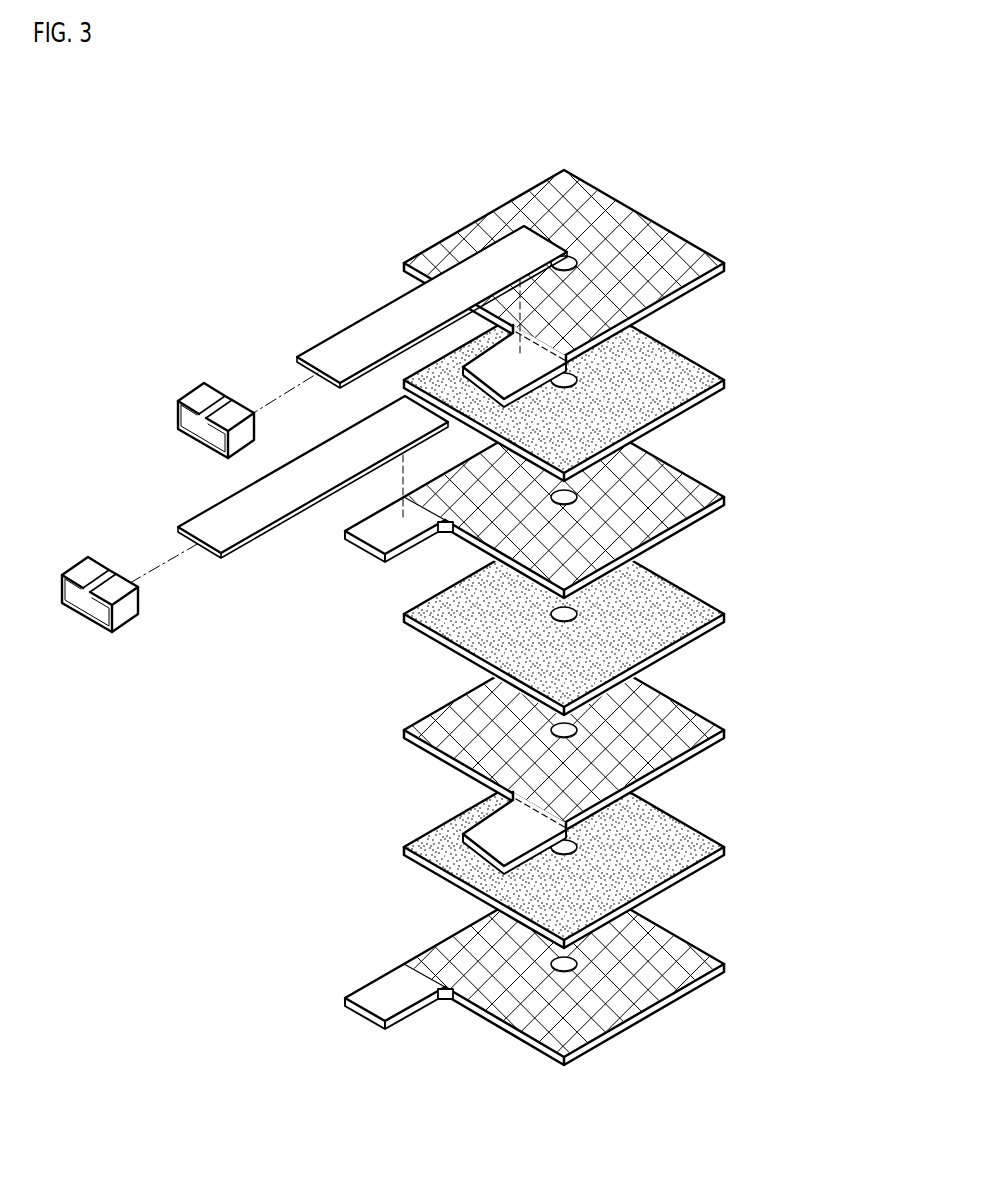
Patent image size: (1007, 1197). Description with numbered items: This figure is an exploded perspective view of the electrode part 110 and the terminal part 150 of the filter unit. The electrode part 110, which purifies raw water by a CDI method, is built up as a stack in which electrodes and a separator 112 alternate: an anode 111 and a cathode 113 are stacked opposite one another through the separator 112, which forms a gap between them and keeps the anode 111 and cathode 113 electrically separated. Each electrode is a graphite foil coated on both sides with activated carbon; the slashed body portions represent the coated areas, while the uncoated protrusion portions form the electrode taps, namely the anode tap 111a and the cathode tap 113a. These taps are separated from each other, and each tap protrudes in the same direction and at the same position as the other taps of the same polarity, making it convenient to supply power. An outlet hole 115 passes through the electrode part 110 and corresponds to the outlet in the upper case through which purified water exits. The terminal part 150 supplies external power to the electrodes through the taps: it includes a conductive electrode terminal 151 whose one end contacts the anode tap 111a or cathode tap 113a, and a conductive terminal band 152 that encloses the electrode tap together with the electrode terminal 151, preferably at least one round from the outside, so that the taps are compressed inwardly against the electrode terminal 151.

The electrode part 110 is at (503, 597).
The anode 111 is at (503, 597).
The anode tap 111a is at (490, 825).
The separator 112 is at (703, 380).
The cathode 113 is at (503, 615).
The cathode tap 113a is at (377, 990).
The outlet hole 115 is at (567, 254).
The terminal part 150 is at (314, 415).
The electrode terminal 151 is at (345, 340).
The terminal band 152 is at (201, 396).